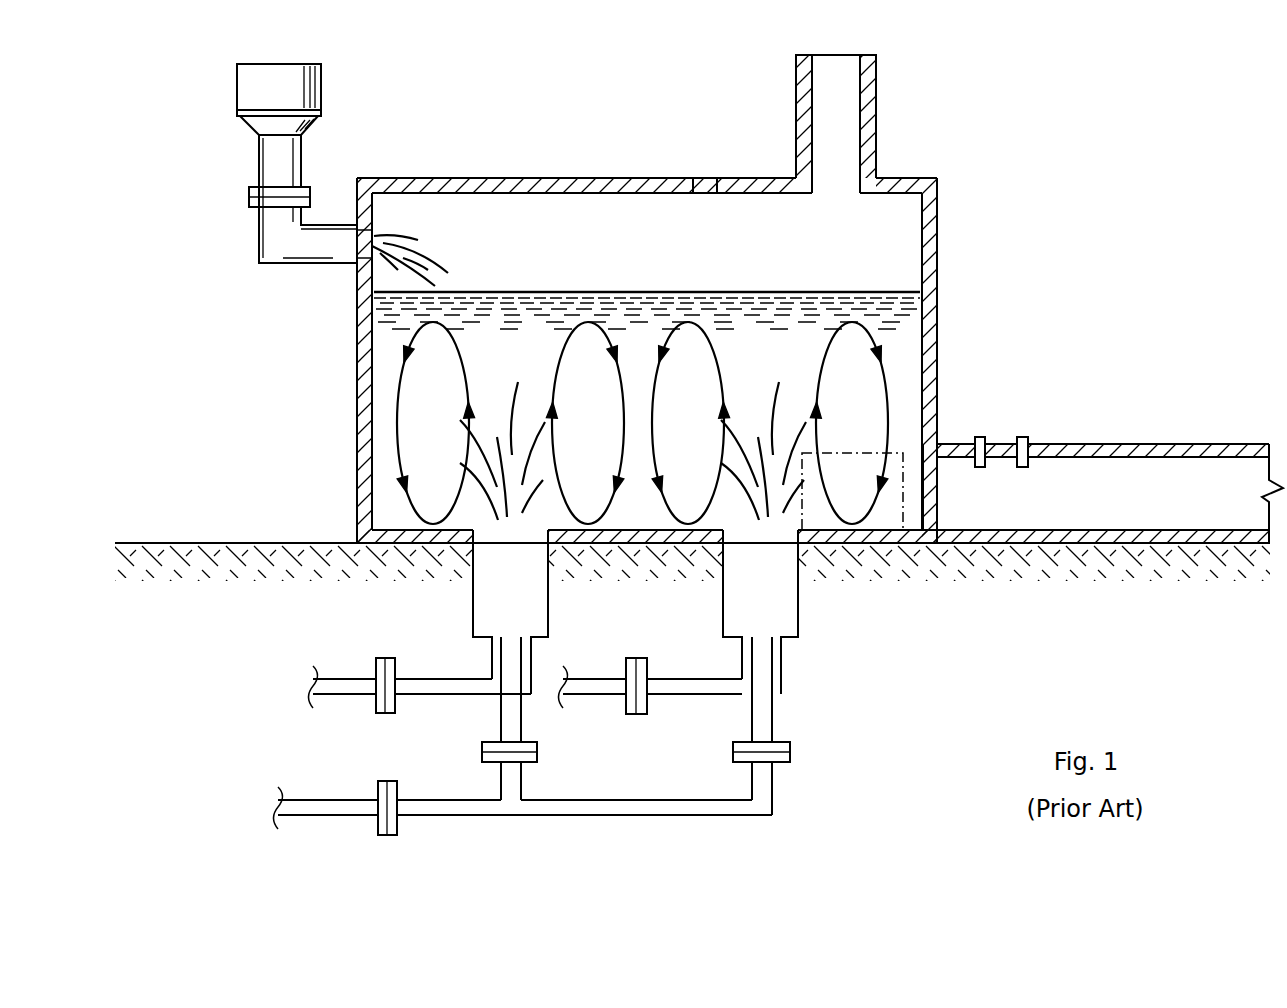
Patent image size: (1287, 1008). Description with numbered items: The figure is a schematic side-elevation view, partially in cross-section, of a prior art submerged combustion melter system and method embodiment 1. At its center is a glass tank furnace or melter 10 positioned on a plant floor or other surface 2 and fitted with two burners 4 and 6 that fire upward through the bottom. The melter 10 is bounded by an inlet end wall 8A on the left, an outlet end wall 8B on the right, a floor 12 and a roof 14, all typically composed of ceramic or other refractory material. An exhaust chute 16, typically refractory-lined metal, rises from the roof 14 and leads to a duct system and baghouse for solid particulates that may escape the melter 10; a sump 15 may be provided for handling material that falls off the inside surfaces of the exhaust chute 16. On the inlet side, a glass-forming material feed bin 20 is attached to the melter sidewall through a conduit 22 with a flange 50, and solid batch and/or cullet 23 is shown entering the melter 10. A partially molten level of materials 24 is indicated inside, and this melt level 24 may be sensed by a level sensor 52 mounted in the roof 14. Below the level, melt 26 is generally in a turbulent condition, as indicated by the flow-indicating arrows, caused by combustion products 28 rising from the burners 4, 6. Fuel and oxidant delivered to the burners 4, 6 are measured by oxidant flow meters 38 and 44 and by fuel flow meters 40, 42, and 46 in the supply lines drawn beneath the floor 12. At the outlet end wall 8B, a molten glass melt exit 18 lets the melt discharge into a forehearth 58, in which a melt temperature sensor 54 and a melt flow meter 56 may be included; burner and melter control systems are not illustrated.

The submerged combustion melter system and method embodiment 1 is at (1058, 122).
The plant floor or other surface 2 is at (236, 572).
The burner 4 is at (548, 611).
The burner 6 is at (798, 611).
The inlet end wall 8A is at (357, 478).
The outlet end wall 8B is at (937, 270).
The glass tank furnace or melter 10 is at (774, 338).
The floor 12 is at (416, 545).
The roof 14 is at (553, 178).
The sump 15 is at (903, 522).
The exhaust chute 16 is at (876, 112).
The molten glass melt exit 18 is at (938, 497).
The glass-forming material feed bin 20 is at (237, 88).
The conduit 22 is at (259, 250).
The solid batch and/or cullet 23 is at (425, 252).
The partially molten level of materials 24 is at (607, 292).
The melt 26 is at (570, 392).
The combustion products 28 is at (570, 478).
The oxidant flow meter 38 is at (390, 713).
The fuel flow meter 40 is at (392, 835).
The fuel flow meter 42 is at (537, 757).
The oxidant flow meter 44 is at (641, 715).
The fuel flow meter 46 is at (790, 757).
The feed flange 50 is at (249, 194).
The level sensor 52 is at (708, 178).
The melt temperature sensor 54 is at (980, 436).
The melt flow meter 56 is at (1022, 436).
The forehearth 58 is at (1160, 444).